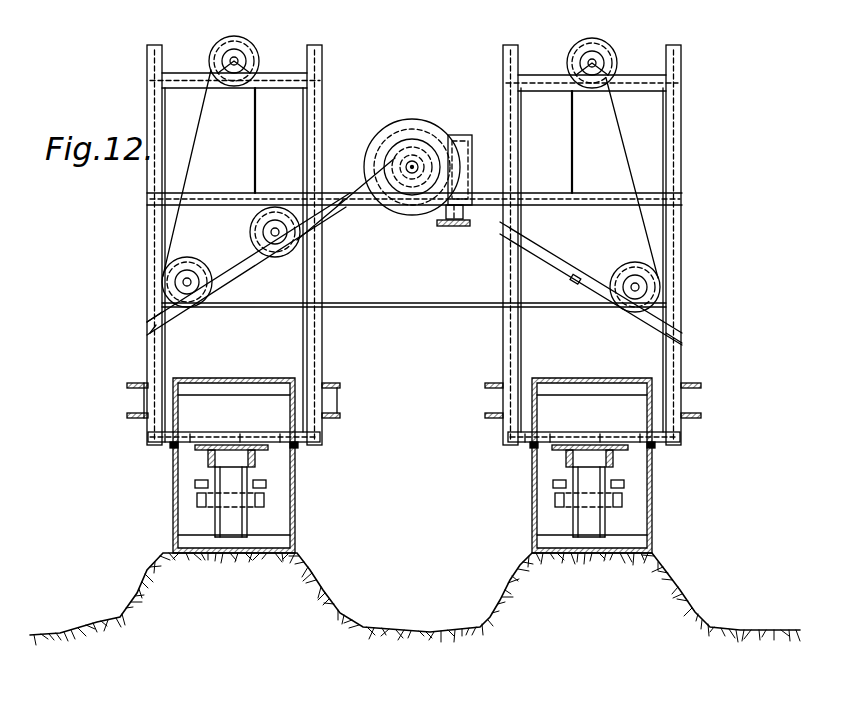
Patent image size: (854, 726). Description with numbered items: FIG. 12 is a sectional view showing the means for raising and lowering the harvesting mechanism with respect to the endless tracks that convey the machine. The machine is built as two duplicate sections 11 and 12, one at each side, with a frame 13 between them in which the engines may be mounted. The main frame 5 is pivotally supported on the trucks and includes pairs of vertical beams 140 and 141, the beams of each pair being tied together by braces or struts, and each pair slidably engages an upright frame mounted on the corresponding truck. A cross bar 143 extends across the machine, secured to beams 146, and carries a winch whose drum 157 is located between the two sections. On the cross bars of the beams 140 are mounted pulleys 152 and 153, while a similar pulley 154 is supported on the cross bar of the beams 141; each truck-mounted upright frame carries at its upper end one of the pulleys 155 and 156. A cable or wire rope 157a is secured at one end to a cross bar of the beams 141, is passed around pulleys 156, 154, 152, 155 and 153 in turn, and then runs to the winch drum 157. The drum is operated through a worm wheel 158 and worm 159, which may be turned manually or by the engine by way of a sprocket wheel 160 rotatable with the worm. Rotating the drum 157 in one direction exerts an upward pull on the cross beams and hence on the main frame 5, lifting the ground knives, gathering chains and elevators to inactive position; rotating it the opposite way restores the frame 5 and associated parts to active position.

The main frame 5 is at (130, 420).
The section 11 is at (145, 330).
The section 12 is at (685, 228).
The frame 13 is at (341, 417).
The vertical beam 140 is at (380, 231).
The vertical beam 141 is at (591, 233).
The cross bar 143 is at (213, 196).
The beam 146 is at (508, 450).
The pulley 152 is at (205, 276).
The pulley 153 is at (278, 206).
The pulley 154 is at (625, 262).
The pulley 155 is at (249, 44).
The pulley 156 is at (606, 50).
The winch drum 157 is at (409, 158).
The cable 157a is at (256, 130).
The worm wheel 158 is at (440, 138).
The worm 159 is at (470, 160).
The sprocket wheel 160 is at (447, 228).